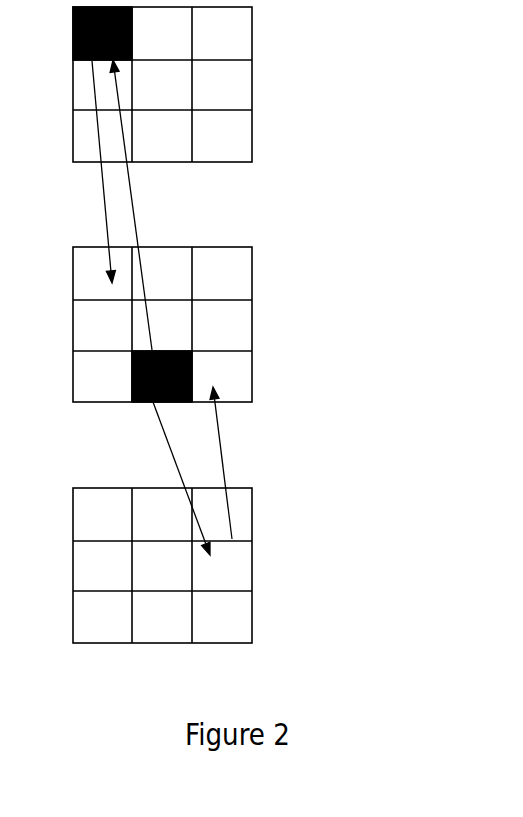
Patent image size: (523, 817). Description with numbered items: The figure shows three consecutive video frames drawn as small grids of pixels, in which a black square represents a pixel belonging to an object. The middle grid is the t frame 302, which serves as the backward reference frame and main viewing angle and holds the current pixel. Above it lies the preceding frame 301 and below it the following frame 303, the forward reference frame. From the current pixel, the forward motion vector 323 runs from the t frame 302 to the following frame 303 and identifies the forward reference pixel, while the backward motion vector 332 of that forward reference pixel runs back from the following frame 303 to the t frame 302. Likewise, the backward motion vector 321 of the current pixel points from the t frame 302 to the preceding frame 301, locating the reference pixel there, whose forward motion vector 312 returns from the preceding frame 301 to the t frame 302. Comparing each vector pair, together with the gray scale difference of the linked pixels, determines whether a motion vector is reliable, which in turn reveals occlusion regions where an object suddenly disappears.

The t−1 frame 301 is at (252, 79).
The t frame 302 is at (252, 323).
The t+1 frame 303 is at (252, 572).
The forward motion vector of the t−1 frame reference pixel 312 is at (105, 185).
The backward motion vector of the current pixel 321 is at (137, 211).
The forward motion vector of the current pixel 323 is at (163, 442).
The backward motion vector of the forward reference pixel 332 is at (225, 467).